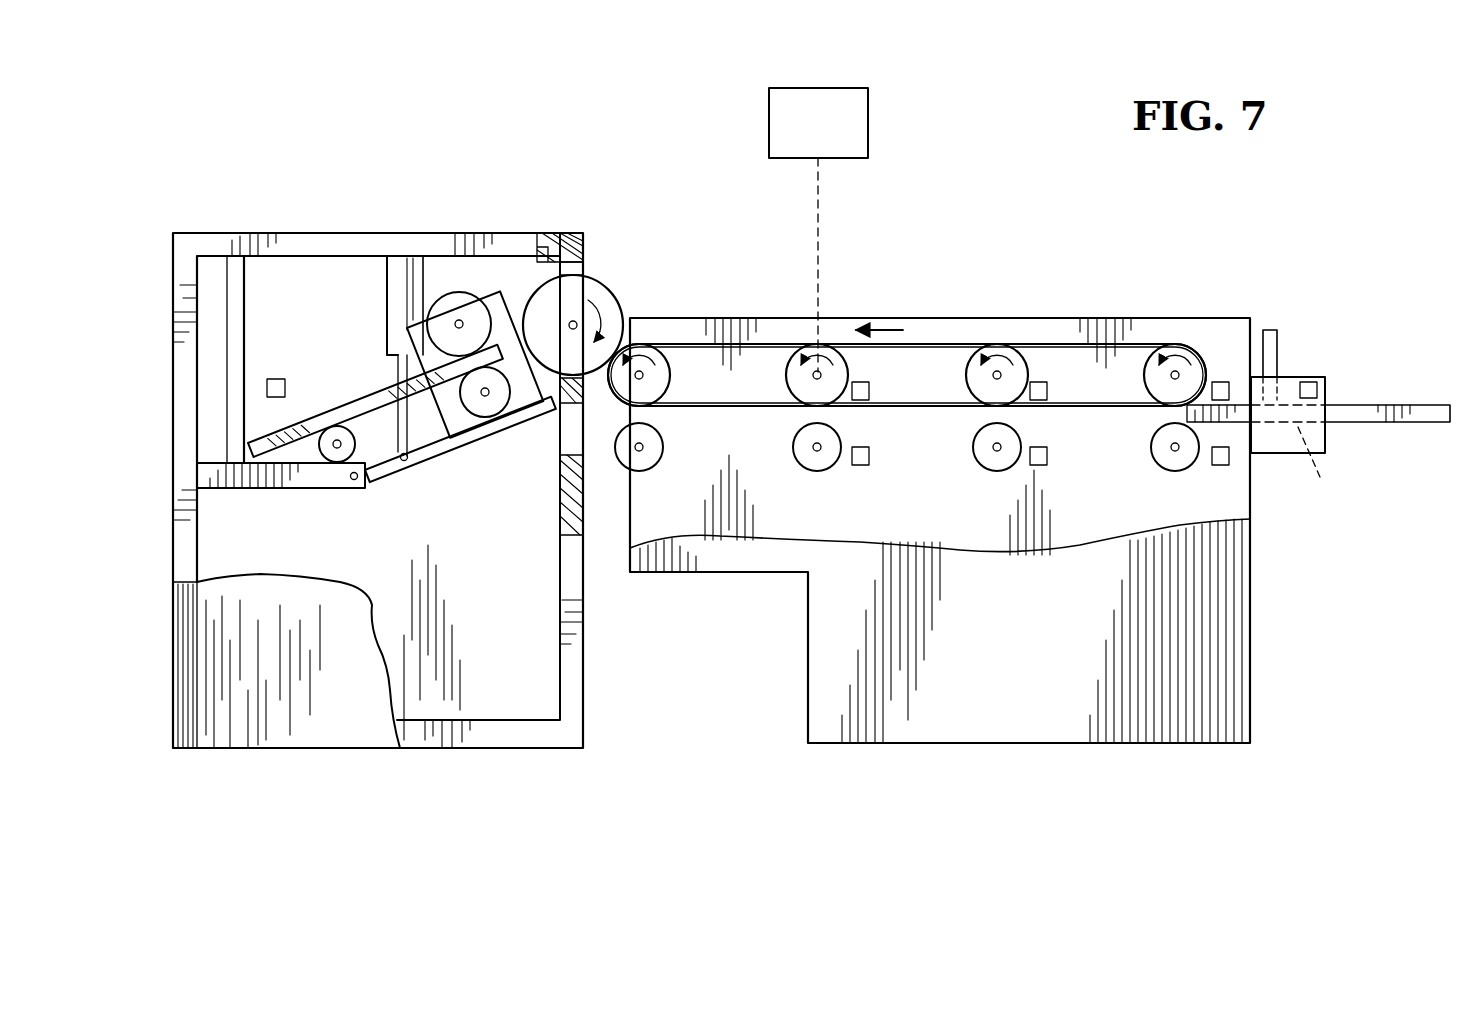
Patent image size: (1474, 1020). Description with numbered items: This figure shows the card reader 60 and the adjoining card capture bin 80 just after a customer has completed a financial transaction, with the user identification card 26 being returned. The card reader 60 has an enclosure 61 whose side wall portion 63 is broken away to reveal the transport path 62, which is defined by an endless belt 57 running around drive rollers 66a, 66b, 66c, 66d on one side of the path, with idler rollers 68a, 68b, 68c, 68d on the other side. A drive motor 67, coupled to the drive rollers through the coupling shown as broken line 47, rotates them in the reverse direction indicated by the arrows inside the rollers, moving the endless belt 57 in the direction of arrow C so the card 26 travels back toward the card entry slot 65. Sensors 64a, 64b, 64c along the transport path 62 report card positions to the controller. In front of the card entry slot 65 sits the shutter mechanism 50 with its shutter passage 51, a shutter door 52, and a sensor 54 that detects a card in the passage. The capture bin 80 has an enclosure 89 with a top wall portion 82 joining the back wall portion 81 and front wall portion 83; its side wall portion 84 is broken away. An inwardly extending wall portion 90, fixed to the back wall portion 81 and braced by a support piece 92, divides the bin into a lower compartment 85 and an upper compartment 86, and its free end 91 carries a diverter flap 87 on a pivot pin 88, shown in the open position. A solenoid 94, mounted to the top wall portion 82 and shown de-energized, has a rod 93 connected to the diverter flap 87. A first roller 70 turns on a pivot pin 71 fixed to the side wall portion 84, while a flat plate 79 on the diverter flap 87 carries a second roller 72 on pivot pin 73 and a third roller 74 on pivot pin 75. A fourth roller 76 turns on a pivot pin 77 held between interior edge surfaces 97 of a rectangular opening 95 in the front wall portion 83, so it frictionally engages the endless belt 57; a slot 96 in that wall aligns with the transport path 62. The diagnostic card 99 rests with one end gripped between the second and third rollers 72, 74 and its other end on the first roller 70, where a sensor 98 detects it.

The user identification card 26 is at (1415, 405).
The broken line 47 is at (818, 232).
The shutter mechanism 50 is at (1356, 391).
The shutter passage 51 is at (1320, 478).
The shutter door 52 is at (1277, 330).
The sensor 54 is at (1318, 384).
The endless belt 57 is at (932, 340).
The card reader 60 is at (978, 536).
The enclosure 61 is at (1000, 745).
The transport path 62 is at (645, 420).
The side wall portion 63 is at (1072, 550).
The sensor 64a is at (1226, 382).
The sensor 64b is at (1045, 382).
The sensor 64c is at (866, 382).
The card entry slot 65 is at (1243, 412).
The drive roller 66a is at (1150, 385).
The drive roller 66b is at (975, 385).
The drive roller 66c is at (790, 383).
The drive roller 66d is at (668, 383).
The drive motor 67 is at (868, 127).
The idler roller 68a is at (1172, 470).
The idler roller 68b is at (995, 470).
The idler roller 68c is at (818, 470).
The idler roller 68d is at (642, 470).
The first roller 70 is at (338, 432).
The pivot pin 71 is at (342, 444).
The second roller 72 is at (497, 440).
The pivot pin 73 is at (472, 413).
The third roller 74 is at (508, 277).
The pivot pin 75 is at (460, 320).
The fourth roller 76 is at (620, 308).
The pivot pin 77 is at (574, 321).
The flat plate 79 is at (498, 405).
The card capture bin 80 is at (405, 498).
The back wall portion 81 is at (178, 405).
The top wall portion 82 is at (397, 250).
The front wall portion 83 is at (571, 662).
The side wall portion 84 is at (320, 600).
The lower compartment 85 is at (210, 548).
The upper compartment 86 is at (317, 278).
The diverter flap 87 is at (410, 465).
The pivot pin 88 is at (358, 482).
The enclosure 89 is at (374, 749).
The inwardly extending wall portion 90 is at (250, 490).
The free end 91 is at (345, 478).
The support piece 92 is at (240, 305).
The rod 93 is at (401, 372).
The solenoid 94 is at (394, 310).
The rectangular opening 95 is at (583, 269).
The slot 96 is at (565, 442).
The interior edge surface 97 is at (574, 378).
The sensor 98 is at (282, 378).
The diagnostic card 99 is at (372, 400).
The arrow C is at (888, 330).